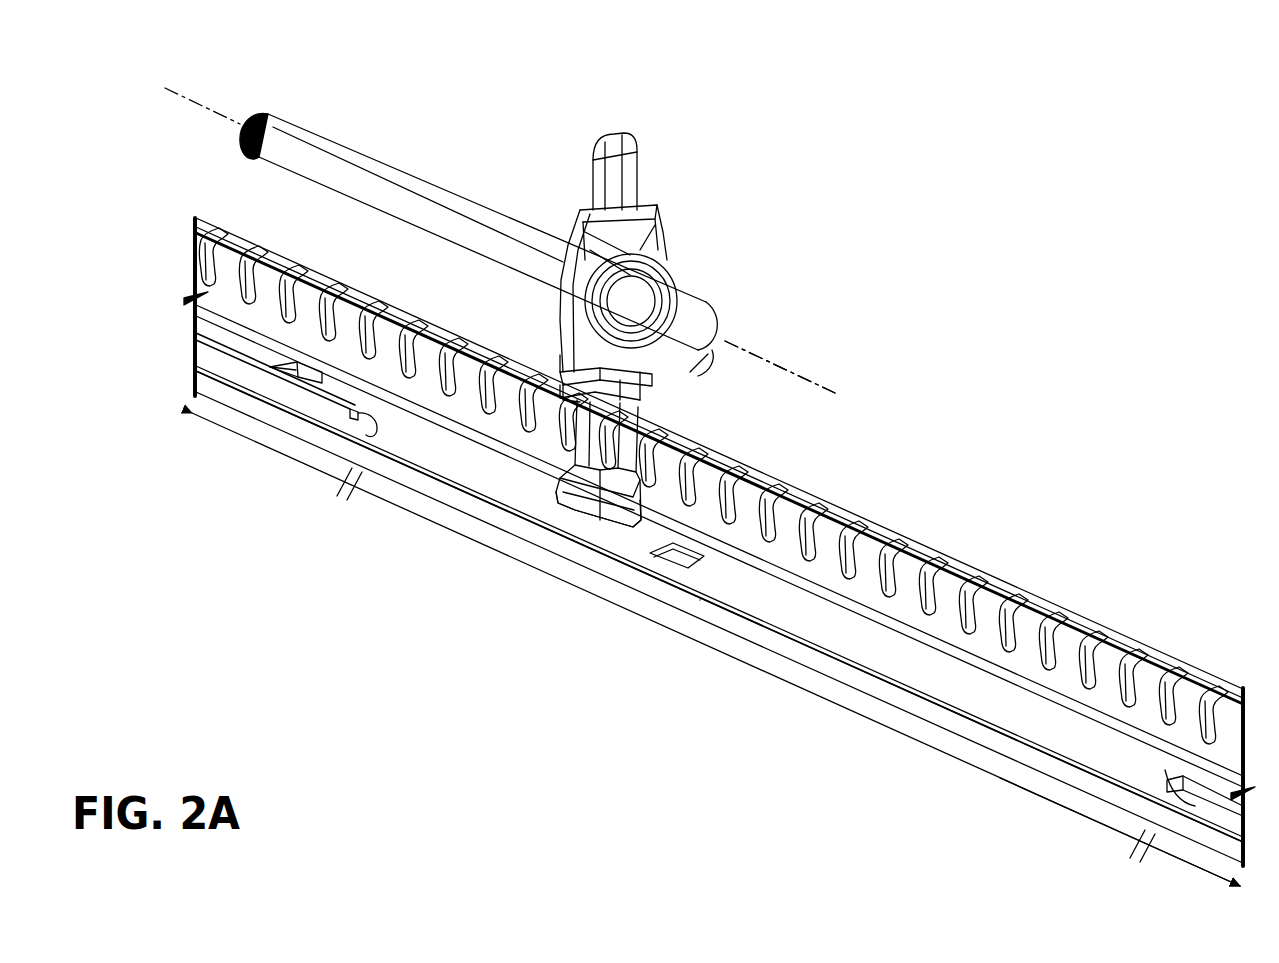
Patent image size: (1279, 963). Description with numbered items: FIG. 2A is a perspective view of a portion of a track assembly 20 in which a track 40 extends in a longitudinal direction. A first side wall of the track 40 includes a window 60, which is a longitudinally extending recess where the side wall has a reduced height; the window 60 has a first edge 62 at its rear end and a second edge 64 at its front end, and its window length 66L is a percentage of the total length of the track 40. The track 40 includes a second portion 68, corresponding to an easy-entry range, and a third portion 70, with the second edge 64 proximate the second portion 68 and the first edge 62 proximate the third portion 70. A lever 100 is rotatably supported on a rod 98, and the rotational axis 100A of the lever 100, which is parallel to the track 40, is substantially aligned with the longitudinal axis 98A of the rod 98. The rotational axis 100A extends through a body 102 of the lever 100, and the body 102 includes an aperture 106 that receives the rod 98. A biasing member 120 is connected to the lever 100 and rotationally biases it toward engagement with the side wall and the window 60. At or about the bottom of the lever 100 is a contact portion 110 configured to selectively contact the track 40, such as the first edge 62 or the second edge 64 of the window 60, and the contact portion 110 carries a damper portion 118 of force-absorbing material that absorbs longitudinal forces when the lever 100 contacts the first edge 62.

The cargo management system 20 is at (514, 126).
The track 40 is at (178, 283).
The window 60 is at (1040, 730).
The first edge 62 is at (1175, 775).
The second edge 64 is at (370, 418).
The lower flange 66L is at (643, 618).
The second portion 68 is at (1183, 866).
The third portion 70 is at (226, 434).
The rod 98 is at (712, 320).
The longitudinal axis 98A is at (815, 377).
The lever 100 is at (656, 196).
The rotational axis 100A is at (815, 377).
The body 102 is at (553, 357).
The aperture 106 is at (665, 292).
The contact portion 110 is at (550, 493).
The damper portion 118 is at (560, 508).
The biasing member 120 is at (680, 265).